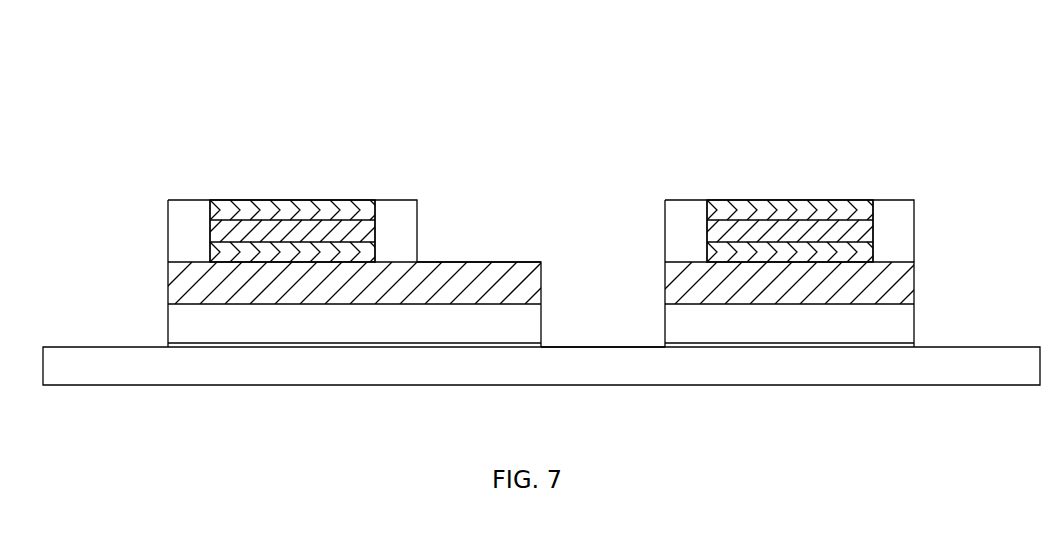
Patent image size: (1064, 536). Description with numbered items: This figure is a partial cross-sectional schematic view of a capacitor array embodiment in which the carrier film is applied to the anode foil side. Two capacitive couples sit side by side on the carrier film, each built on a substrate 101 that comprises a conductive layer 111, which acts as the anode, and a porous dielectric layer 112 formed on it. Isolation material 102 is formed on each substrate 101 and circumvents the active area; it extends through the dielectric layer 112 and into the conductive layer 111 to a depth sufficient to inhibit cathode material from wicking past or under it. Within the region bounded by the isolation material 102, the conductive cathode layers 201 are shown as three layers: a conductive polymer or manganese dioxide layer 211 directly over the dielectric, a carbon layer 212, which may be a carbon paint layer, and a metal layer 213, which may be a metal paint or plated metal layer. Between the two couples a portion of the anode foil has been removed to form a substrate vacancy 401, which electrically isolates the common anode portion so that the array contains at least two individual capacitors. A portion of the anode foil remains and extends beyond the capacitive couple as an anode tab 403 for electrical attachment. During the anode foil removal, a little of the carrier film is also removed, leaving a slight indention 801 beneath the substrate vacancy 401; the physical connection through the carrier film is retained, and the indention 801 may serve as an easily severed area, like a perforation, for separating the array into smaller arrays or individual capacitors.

The substrate 101 is at (165, 265).
The conductive layer 111 is at (208, 327).
The porous dielectric layer 112 is at (313, 292).
The isolation material 102 is at (187, 232).
The conductive cathode layers 201 is at (427, 27).
The conductive polymer layer or manganese dioxide layer 211 is at (300, 250).
The carbon layer 212 is at (272, 232).
The metal layer 213 is at (240, 205).
The substrate vacancy 401 is at (607, 298).
The anode tab 403 is at (502, 257).
The indention 801 is at (630, 350).